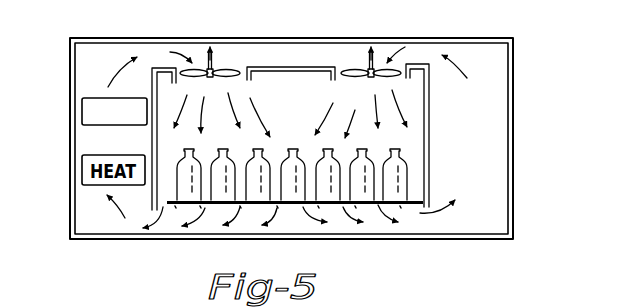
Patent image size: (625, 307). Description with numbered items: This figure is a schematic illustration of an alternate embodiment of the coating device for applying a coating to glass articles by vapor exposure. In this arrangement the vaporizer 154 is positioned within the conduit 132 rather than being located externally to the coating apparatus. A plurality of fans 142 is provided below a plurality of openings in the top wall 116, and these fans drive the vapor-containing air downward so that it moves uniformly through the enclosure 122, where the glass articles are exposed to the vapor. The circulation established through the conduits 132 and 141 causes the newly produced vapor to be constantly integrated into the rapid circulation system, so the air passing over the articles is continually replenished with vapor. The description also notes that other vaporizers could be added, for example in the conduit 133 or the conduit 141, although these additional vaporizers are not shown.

The top wall 116 is at (283, 66).
The enclosure 122 is at (308, 104).
The conduit 132 is at (92, 144).
The conduit 133 is at (493, 170).
The conduit 141 is at (243, 52).
The fan 142 is at (208, 52).
The vaporizer 154 is at (80, 98).